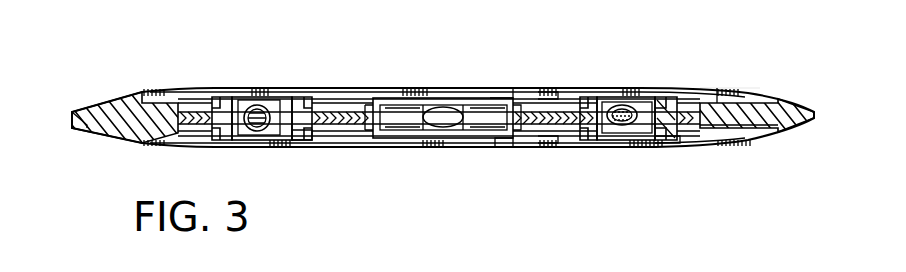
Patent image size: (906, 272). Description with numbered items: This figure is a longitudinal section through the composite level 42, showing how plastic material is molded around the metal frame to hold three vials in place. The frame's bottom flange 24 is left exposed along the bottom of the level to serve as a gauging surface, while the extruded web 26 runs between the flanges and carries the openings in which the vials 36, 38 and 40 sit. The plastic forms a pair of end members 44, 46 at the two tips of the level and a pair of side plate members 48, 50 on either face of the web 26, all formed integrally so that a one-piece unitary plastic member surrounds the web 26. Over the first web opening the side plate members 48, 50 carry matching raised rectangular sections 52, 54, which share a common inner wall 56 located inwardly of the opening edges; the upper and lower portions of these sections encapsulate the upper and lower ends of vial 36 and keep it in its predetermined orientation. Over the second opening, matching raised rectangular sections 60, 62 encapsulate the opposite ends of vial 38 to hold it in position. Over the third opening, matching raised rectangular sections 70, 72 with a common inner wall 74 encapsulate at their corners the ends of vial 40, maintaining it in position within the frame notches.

The bottom flange 24 is at (370, 148).
The web 26 is at (351, 100).
The vial 36 is at (257, 143).
The vial 38 is at (446, 140).
The vial 40 is at (627, 142).
The composite level 42 is at (790, 26).
The end member 44 is at (82, 138).
The end member 46 is at (801, 100).
The side plate member 48 is at (547, 146).
The side plate member 50 is at (545, 92).
The raised rectangular section 52 is at (297, 142).
The raised rectangular section 54 is at (293, 94).
The common inner wall 56 is at (277, 93).
The raised rectangular section 60 is at (500, 148).
The raised rectangular section 62 is at (500, 86).
The raised rectangular section 70 is at (665, 148).
The raised rectangular section 72 is at (663, 95).
The common inner wall 74 is at (602, 99).